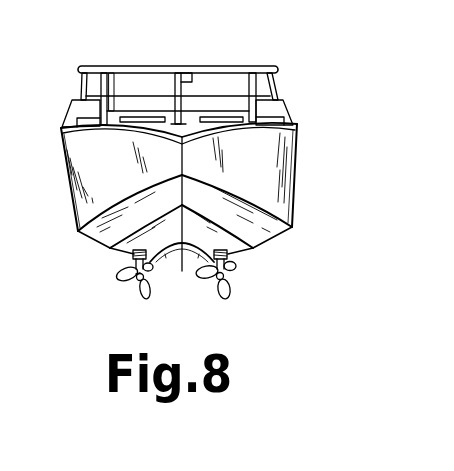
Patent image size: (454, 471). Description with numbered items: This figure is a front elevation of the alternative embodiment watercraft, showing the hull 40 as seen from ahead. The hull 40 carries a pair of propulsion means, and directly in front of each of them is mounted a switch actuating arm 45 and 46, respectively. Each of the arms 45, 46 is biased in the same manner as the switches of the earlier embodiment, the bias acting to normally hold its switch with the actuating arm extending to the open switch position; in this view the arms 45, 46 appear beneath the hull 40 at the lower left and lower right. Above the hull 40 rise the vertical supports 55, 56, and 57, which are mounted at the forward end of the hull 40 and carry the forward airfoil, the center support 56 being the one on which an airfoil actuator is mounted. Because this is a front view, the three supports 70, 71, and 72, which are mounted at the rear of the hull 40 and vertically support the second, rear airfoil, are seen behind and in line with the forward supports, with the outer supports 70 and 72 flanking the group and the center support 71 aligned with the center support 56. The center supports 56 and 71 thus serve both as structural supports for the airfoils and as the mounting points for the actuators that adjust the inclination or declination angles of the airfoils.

The hull 40 is at (314, 160).
The switch actuating arm 45 is at (120, 264).
The switch actuating arm 46 is at (232, 275).
The vertical support 55 is at (113, 87).
The vertical support 56 is at (174, 88).
The vertical support 57 is at (254, 100).
The support 70 is at (83, 88).
The support 71 is at (186, 88).
The support 72 is at (276, 86).